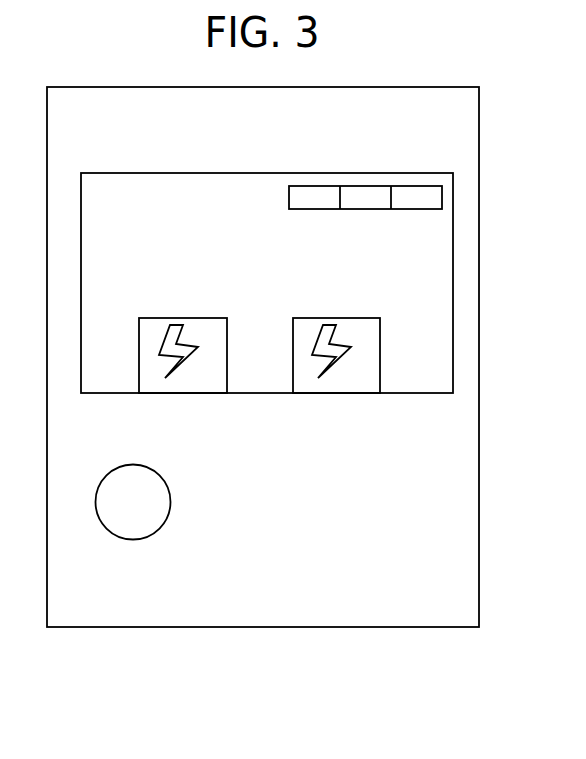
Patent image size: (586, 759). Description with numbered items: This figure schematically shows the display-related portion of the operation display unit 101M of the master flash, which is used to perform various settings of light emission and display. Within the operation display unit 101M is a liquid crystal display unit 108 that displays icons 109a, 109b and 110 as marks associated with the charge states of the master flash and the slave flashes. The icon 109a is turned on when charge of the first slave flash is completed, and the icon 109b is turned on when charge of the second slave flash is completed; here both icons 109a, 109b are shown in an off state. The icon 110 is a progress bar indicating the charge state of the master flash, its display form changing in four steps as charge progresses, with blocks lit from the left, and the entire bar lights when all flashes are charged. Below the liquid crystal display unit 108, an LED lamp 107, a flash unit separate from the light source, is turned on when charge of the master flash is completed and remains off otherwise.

The operation display unit 101M is at (290, 627).
The liquid crystal display unit 108 is at (150, 173).
The icon (progress bar) 110 is at (410, 187).
The icon 109a is at (187, 318).
The icon 109b is at (328, 318).
The LED lamp 107 is at (134, 540).